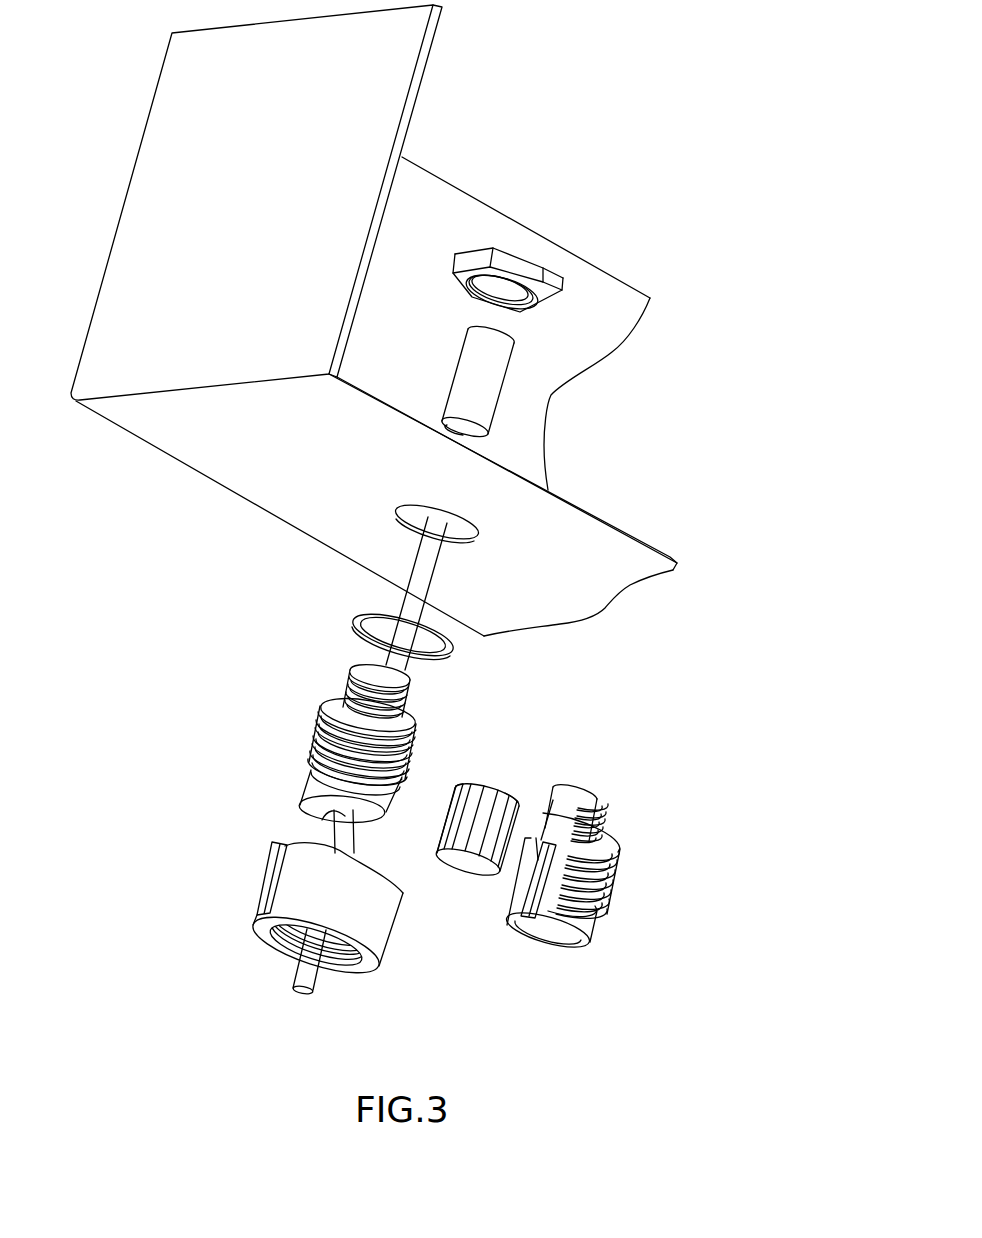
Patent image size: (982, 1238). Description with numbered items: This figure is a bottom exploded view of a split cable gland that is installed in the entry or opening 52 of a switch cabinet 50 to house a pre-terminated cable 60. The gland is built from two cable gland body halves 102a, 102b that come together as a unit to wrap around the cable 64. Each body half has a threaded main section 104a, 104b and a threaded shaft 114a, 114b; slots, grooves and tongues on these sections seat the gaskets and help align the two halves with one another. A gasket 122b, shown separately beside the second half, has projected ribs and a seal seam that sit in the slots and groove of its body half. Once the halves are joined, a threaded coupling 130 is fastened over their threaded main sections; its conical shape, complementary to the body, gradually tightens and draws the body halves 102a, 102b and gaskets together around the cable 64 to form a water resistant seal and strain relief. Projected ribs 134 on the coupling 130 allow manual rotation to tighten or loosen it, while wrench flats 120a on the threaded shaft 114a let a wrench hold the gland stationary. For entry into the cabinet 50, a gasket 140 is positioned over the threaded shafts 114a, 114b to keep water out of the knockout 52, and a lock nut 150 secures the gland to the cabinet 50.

The switch cabinet 50 is at (178, 172).
The opening 52 is at (417, 525).
The pre-terminated cable 60 is at (490, 387).
The cable 64 is at (297, 973).
The cable gland body half 102a is at (298, 728).
The threaded main section 104a is at (317, 783).
The threaded shaft 114a is at (360, 673).
The wrench flats 120a is at (345, 690).
The threaded coupling 130 is at (326, 916).
The projected ribs 134 is at (270, 888).
The gasket 140 is at (453, 655).
The lock nut 150 is at (520, 265).
The gasket 122b is at (500, 792).
The cable gland body half 102b is at (621, 879).
The threaded main section 104b is at (607, 890).
The threaded shaft 114b is at (610, 797).